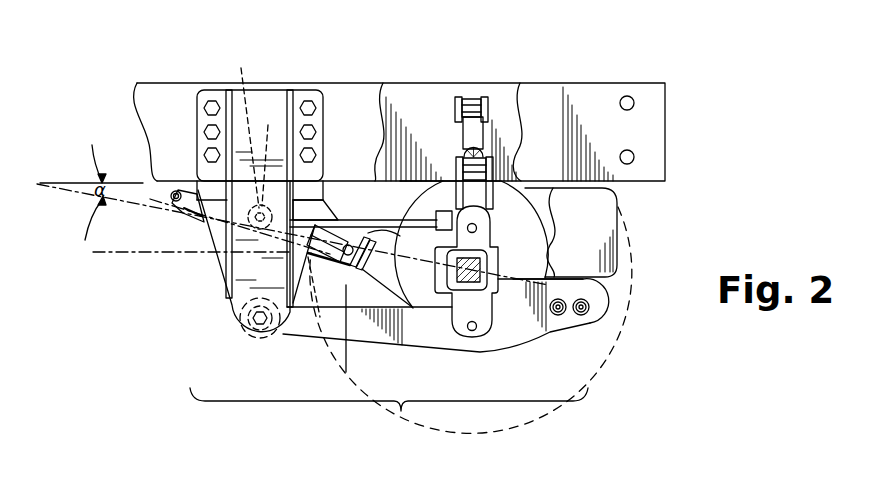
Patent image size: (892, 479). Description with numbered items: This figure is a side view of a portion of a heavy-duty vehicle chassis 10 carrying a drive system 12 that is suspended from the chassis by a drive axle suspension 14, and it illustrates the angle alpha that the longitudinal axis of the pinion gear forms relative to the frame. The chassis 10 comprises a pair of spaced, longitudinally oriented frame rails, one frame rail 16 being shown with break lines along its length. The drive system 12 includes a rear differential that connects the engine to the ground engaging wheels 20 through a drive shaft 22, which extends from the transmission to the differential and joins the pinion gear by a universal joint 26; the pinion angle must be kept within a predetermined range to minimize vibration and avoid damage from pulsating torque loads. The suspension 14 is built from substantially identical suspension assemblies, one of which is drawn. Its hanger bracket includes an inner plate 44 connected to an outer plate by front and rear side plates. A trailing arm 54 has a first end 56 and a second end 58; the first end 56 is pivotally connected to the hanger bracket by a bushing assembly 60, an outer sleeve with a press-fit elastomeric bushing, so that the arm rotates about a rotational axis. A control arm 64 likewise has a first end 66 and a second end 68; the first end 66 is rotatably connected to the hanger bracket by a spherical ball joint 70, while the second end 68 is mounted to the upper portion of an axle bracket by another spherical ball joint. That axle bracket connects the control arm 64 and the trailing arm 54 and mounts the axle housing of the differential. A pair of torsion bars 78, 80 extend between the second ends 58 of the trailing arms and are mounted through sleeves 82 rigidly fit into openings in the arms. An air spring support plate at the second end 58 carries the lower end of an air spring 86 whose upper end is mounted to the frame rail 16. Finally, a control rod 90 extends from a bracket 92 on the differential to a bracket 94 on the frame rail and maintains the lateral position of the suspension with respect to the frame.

The vehicle chassis 10 is at (583, 80).
The drive system 12 is at (446, 172).
The drive axle suspension 14 is at (389, 414).
The frame rail 16 is at (358, 100).
The ground engaging wheels 20 is at (550, 410).
The drive shaft 22 is at (333, 240).
The universal joint 26 is at (355, 203).
The inner plate 44 is at (213, 94).
The trailing arm 54 is at (428, 340).
The first end 56 is at (255, 338).
The second end 58 is at (592, 325).
The bushing assembly 60 is at (232, 327).
The control arm 64 is at (398, 218).
The first end 66 is at (249, 126).
The second end 68 is at (460, 213).
The spherical ball joint 70 is at (268, 167).
The torsion bar 78 is at (556, 316).
The torsion bar 80 is at (579, 316).
The sleeve 82 is at (561, 298).
The air spring 86 is at (620, 221).
The control rod 90 is at (477, 130).
The bracket 92 is at (471, 244).
The bracket 94 is at (484, 96).